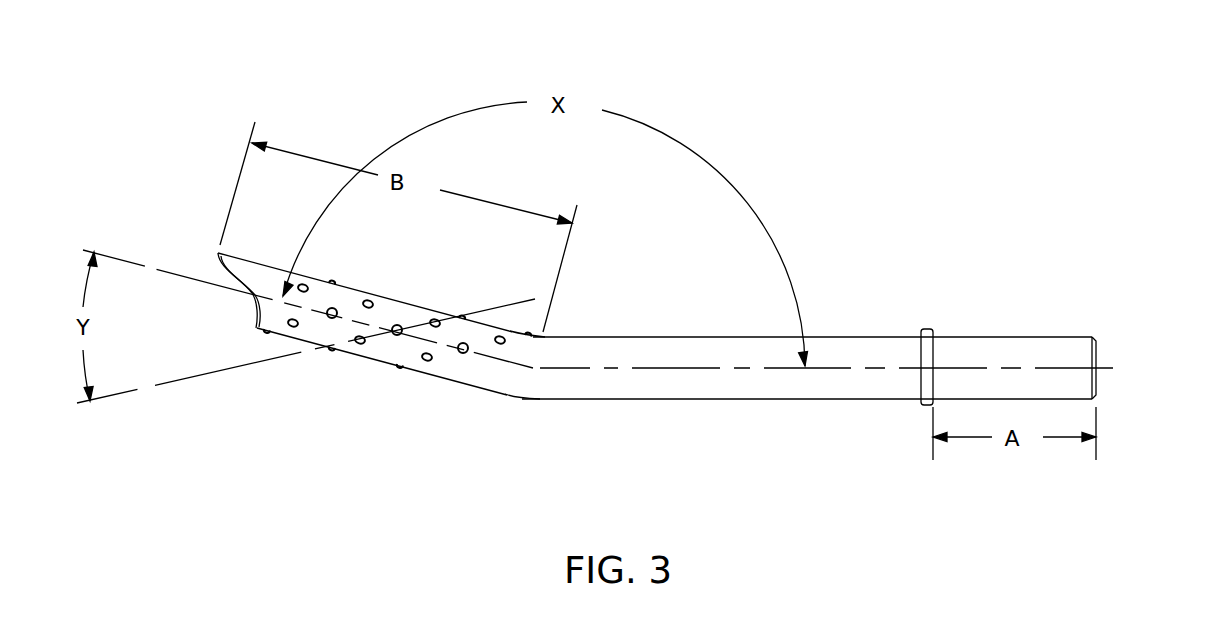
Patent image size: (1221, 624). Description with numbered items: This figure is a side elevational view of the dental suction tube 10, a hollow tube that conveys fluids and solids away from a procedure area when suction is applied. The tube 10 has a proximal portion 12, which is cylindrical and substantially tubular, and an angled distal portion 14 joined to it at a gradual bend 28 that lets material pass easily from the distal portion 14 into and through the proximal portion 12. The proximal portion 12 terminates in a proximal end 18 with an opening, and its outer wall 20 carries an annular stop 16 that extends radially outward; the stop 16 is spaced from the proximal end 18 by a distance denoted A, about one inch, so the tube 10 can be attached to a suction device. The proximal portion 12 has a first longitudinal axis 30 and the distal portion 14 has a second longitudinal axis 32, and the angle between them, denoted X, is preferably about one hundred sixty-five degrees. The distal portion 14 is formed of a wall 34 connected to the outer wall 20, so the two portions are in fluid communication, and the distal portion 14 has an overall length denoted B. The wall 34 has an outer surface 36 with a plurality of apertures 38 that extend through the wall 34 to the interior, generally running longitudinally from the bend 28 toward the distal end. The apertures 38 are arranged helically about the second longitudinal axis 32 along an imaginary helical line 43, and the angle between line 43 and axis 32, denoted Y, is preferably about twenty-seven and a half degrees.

The dental suction tube 10 is at (885, 158).
The proximal portion 12 is at (838, 355).
The distal portion 14 is at (375, 350).
The stop 16 is at (928, 352).
The proximal end 18 is at (1098, 350).
The outer wall 20 is at (752, 385).
The bend 28 is at (533, 400).
The first longitudinal axis 30 is at (625, 368).
The second longitudinal axis 32 is at (447, 343).
The wall 34 is at (418, 311).
The outer surface 36 is at (388, 310).
The apertures 38 is at (365, 300).
The helical line 43 is at (233, 370).